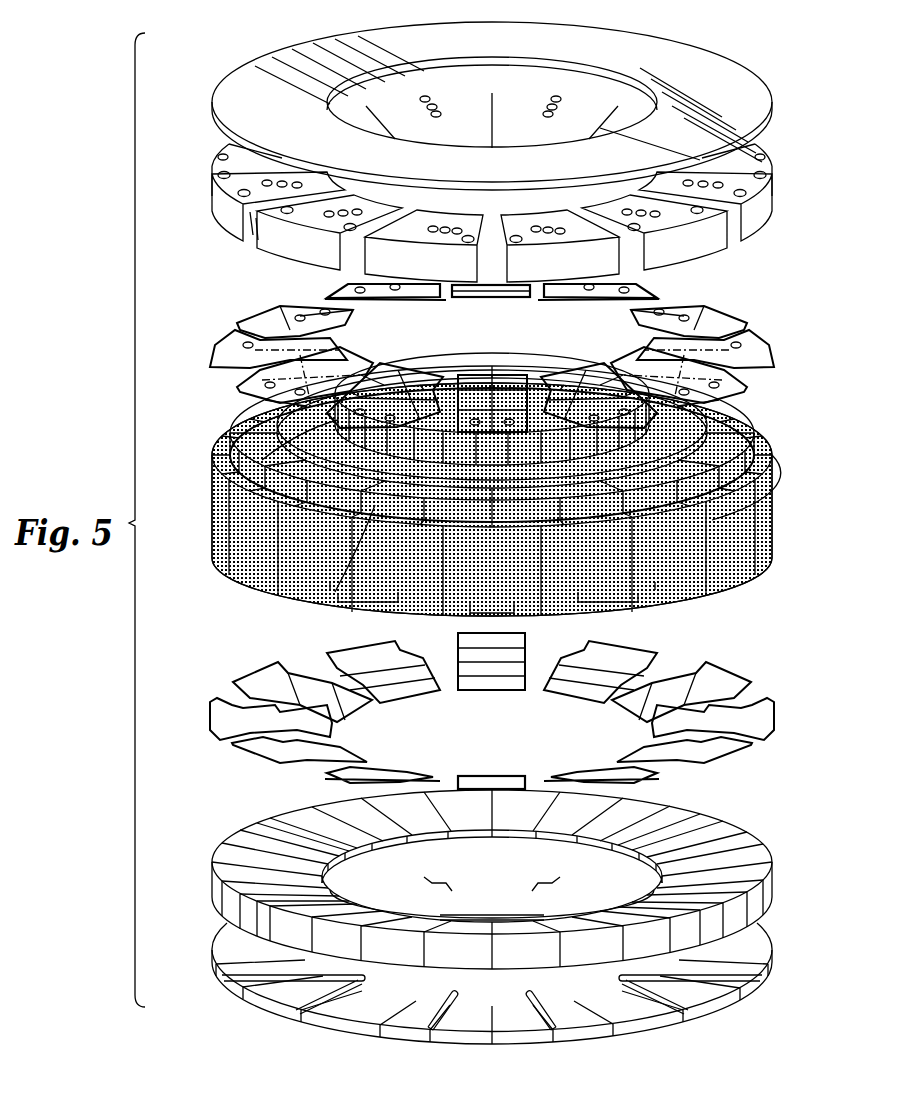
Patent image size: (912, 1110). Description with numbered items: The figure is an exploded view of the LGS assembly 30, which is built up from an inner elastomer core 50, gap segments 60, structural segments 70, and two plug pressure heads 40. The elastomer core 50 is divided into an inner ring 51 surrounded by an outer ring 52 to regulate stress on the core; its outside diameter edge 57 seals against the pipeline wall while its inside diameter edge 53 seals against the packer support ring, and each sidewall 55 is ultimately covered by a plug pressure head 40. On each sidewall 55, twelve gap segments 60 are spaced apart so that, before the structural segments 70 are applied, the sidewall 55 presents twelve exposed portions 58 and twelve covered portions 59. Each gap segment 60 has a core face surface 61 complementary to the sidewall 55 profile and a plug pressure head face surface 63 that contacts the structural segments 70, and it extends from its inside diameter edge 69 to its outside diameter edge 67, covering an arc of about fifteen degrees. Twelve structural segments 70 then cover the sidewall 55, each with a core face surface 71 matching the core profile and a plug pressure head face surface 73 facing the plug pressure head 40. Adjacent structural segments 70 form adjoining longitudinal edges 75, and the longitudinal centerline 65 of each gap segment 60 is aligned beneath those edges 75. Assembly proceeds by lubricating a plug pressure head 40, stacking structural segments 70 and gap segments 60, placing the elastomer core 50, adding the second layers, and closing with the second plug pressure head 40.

The LGS assembly 30 is at (126, 89).
The plug pressure head 40 is at (720, 74).
The elastomer core 50 is at (504, 490).
The inner ring of elastomer core 51 is at (300, 500).
The outer ring of elastomer core 52 is at (330, 598).
The inside diameter edge 53 is at (280, 425).
The sidewall 55 is at (292, 490).
The outside diameter edge 57 is at (232, 457).
The exposed portion 58 is at (712, 574).
The covered portion 59 is at (760, 505).
The gap segment 60 is at (770, 345).
The core face surface 61 is at (262, 670).
The plug pressure head face surface 63 is at (240, 332).
The longitudinal centerline 65 is at (488, 395).
The outside diameter edge 67 is at (738, 302).
The inside diameter edge 69 is at (628, 318).
The structural segment 70 is at (495, 556).
The core face surface 71 is at (706, 810).
The plug pressure head face surface 73 is at (245, 175).
The longitudinal edge 75 is at (255, 228).